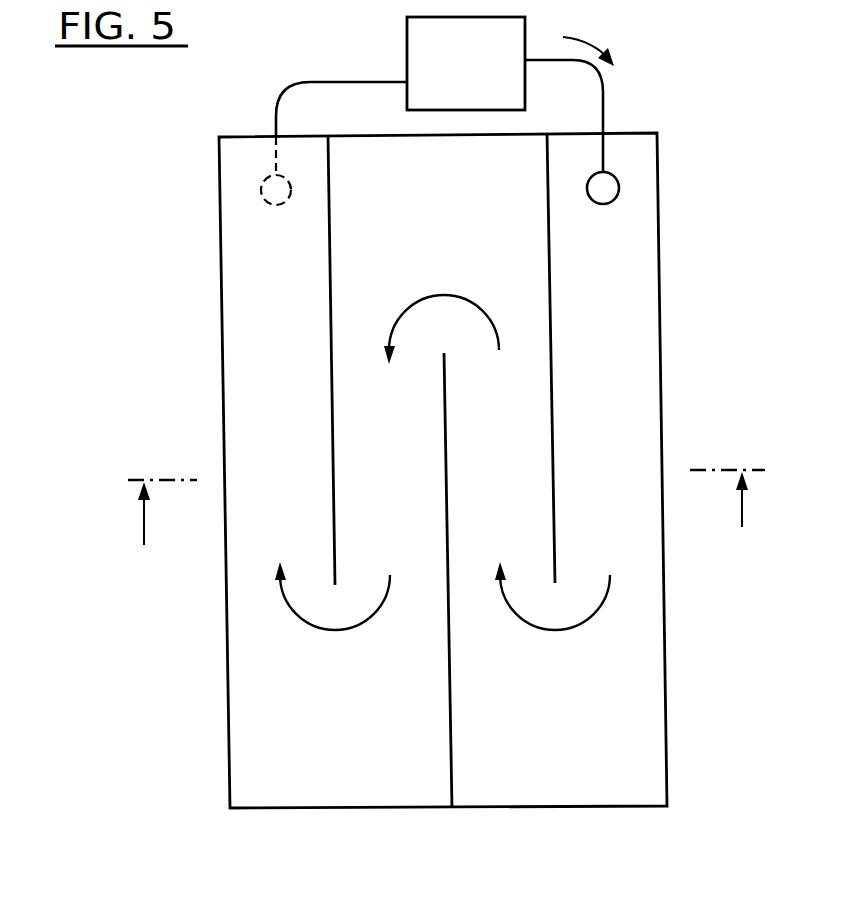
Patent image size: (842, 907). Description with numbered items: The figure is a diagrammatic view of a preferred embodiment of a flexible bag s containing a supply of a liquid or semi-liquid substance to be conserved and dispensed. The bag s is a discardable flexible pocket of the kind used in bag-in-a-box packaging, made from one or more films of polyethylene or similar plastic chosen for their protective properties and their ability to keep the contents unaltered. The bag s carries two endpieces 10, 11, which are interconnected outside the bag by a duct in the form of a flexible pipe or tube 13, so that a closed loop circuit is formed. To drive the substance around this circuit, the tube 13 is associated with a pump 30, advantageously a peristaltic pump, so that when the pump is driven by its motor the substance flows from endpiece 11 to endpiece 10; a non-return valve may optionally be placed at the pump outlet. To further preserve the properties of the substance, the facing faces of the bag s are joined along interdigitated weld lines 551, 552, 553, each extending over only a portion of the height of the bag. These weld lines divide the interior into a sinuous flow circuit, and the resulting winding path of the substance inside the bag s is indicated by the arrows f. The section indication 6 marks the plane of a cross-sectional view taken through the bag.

The flexible bag s is at (228, 720).
The weld line 553 is at (331, 397).
The weld line 551 is at (552, 378).
The weld line 552 is at (447, 470).
The arrows f is at (442, 484).
The pump 30 is at (482, 68).
The endpiece 11 is at (262, 190).
The flexible pipe or tube 13 is at (603, 103).
The endpiece 10 is at (610, 192).
The section line VI-VI 6 is at (441, 507).